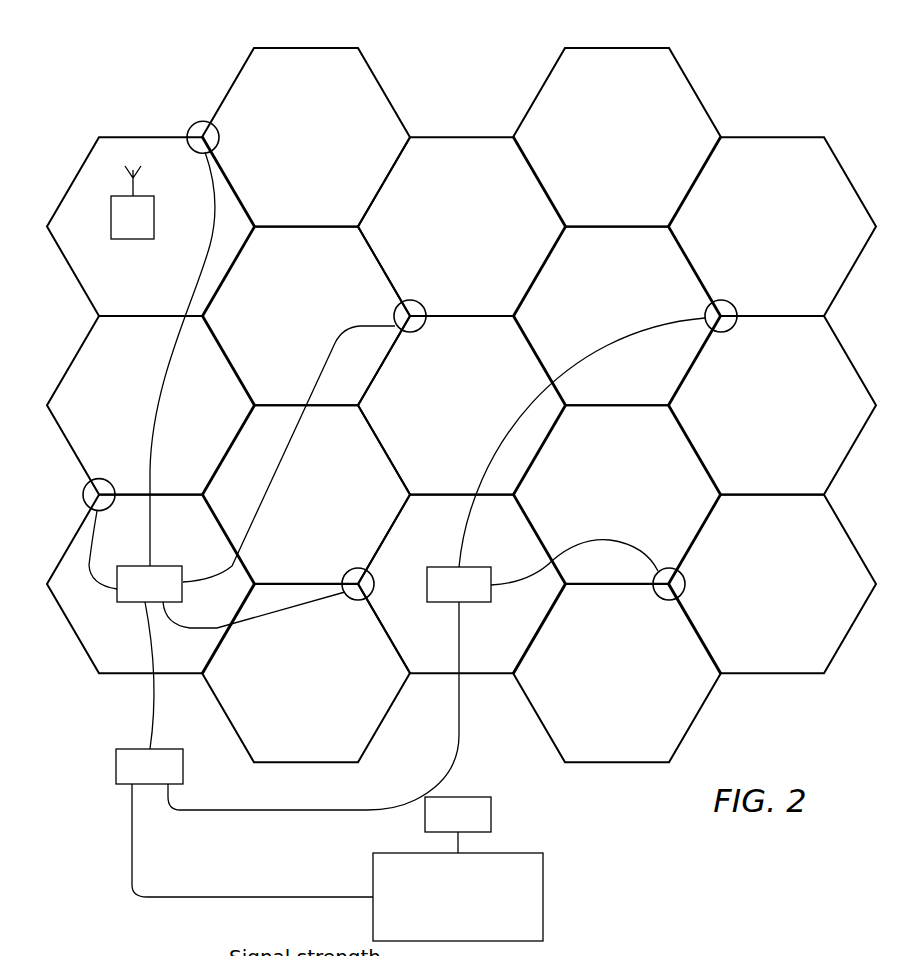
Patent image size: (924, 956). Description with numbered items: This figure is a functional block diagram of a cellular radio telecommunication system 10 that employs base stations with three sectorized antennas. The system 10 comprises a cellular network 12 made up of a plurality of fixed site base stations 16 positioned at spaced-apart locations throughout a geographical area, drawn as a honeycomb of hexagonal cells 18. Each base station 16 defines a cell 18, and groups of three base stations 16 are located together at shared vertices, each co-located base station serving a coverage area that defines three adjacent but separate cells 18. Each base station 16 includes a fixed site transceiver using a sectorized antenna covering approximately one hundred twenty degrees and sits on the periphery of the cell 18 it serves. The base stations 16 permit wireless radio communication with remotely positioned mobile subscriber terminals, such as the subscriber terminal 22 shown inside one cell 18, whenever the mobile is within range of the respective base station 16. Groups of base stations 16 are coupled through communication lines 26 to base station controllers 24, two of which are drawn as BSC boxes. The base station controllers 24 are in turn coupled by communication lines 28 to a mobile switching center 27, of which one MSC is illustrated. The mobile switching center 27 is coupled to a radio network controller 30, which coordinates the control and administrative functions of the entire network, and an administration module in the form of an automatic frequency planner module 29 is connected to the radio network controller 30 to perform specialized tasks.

The cellular radio telecommunication system 10 is at (623, 808).
The cellular network 12 is at (127, 118).
The base station 16 is at (392, 369).
The cell 18 is at (449, 405).
The subscriber terminal 22 is at (133, 241).
The base station controller 24 is at (300, 601).
The communication lines 26 is at (357, 401).
The mobile switching center 27 is at (183, 763).
The communication lines 28 is at (276, 706).
The automatic frequency planner module 29 is at (480, 797).
The radio network controller 30 is at (520, 853).